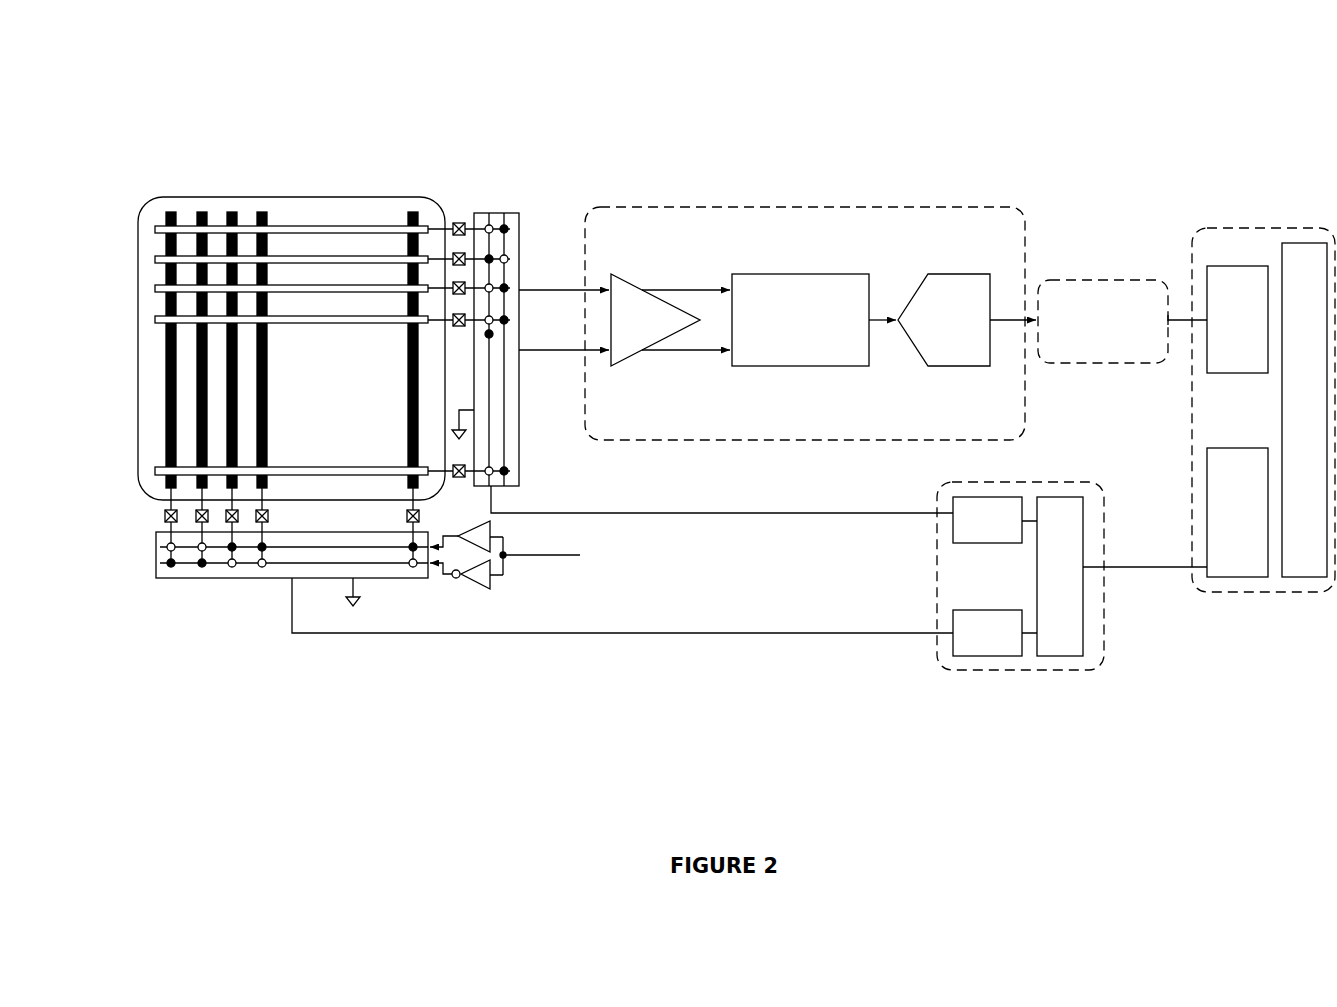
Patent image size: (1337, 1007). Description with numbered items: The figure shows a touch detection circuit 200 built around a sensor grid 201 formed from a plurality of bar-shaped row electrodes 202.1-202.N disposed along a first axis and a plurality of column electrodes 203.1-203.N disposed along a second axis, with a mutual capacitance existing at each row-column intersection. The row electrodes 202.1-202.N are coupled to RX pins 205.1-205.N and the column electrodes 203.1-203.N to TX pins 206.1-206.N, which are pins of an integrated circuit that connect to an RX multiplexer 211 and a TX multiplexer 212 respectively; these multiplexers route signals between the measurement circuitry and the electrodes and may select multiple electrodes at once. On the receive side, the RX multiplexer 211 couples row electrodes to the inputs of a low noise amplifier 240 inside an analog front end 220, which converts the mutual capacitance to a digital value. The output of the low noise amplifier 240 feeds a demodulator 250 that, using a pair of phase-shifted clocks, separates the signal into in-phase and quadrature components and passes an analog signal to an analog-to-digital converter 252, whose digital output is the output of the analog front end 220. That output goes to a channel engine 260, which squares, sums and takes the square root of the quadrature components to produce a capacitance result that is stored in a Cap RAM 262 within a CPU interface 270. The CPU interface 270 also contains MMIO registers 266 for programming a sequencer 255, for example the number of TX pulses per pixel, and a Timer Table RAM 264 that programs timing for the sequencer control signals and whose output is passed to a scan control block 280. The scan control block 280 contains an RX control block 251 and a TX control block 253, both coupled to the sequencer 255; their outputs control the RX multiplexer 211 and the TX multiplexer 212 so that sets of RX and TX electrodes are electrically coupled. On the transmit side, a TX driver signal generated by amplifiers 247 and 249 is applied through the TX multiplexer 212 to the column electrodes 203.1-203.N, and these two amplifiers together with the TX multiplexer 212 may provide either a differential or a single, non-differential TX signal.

The touch detection circuit 200 is at (1243, 40).
The sensor grid 201 is at (291, 348).
The row electrode 202.1 is at (292, 227).
The row electrode 202.N is at (293, 468).
The column electrode 203.1 is at (171, 212).
The column electrode 203.N is at (408, 442).
The RX pin 205.1 is at (455, 223).
The RX pin 205.N is at (459, 480).
The TX pin 206.1 is at (163, 517).
The TX pin 206.N is at (406, 519).
The RX multiplexer 211 is at (519, 455).
The TX multiplexer 212 is at (170, 580).
The analog front end 220 is at (1000, 435).
The low noise amplifier 240 is at (655, 320).
The amplifier 247 is at (490, 525).
The amplifier 249 is at (490, 585).
The demodulator 250 is at (800, 320).
The RX control block 251 is at (988, 543).
The analog-to-digital converter 252 is at (944, 320).
The TX control block 253 is at (988, 610).
The sequencer 255 is at (1060, 576).
The channel engine 260 is at (1103, 321).
The capacitance value storage memory (Cap RAM) 262 is at (1224, 348).
The Timer Table RAM 264 is at (1226, 549).
The MMIO registers 266 is at (1304, 410).
The CPU interface 270 is at (1263, 386).
The scan control block 280 is at (1020, 613).